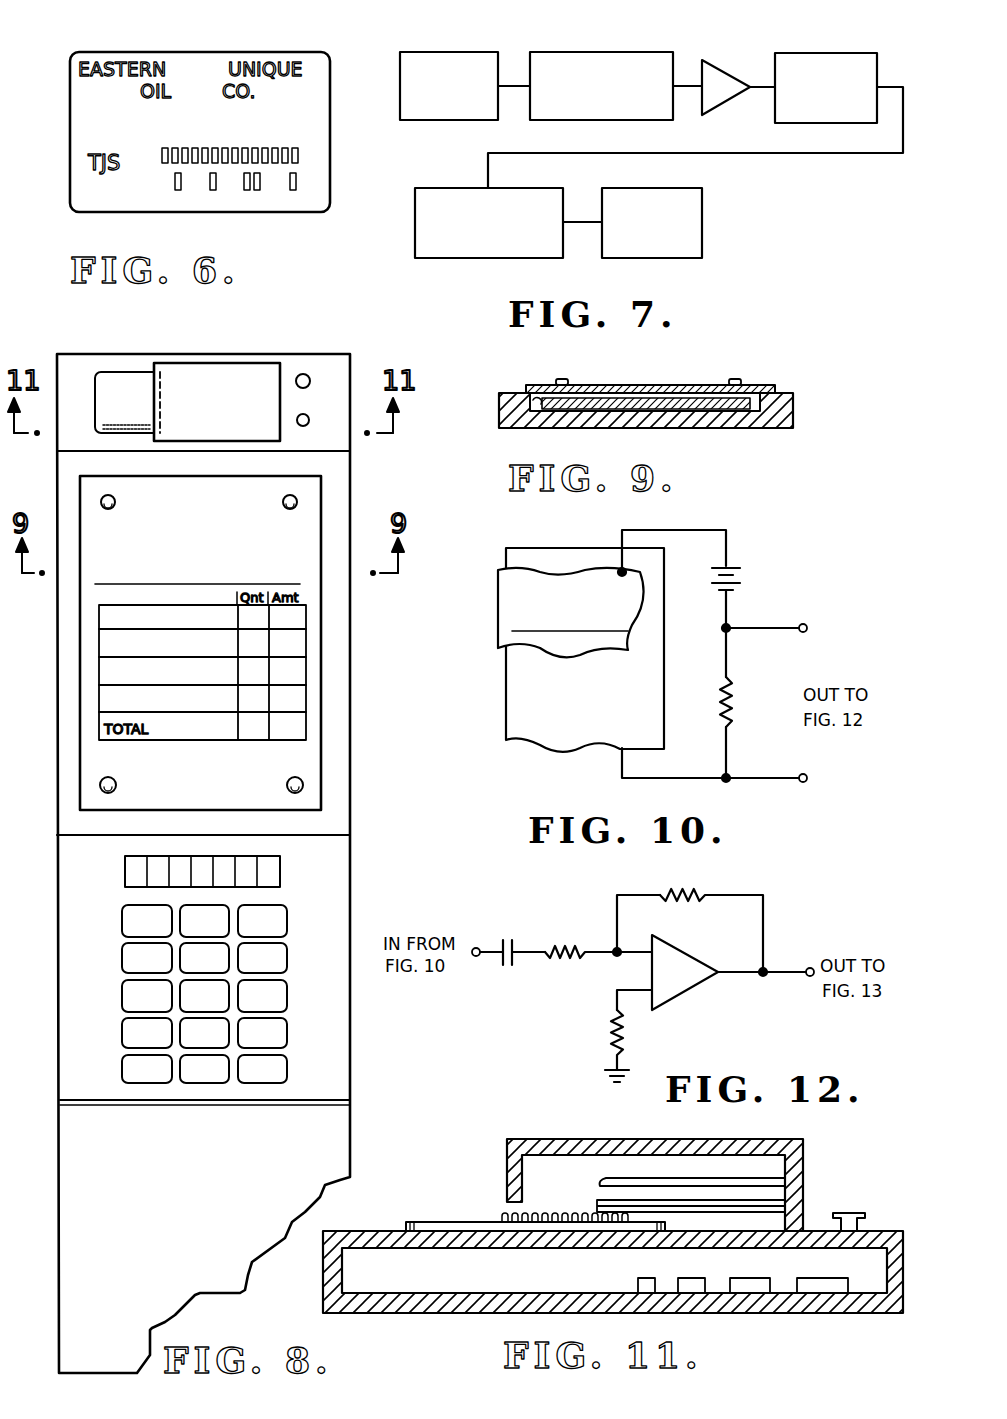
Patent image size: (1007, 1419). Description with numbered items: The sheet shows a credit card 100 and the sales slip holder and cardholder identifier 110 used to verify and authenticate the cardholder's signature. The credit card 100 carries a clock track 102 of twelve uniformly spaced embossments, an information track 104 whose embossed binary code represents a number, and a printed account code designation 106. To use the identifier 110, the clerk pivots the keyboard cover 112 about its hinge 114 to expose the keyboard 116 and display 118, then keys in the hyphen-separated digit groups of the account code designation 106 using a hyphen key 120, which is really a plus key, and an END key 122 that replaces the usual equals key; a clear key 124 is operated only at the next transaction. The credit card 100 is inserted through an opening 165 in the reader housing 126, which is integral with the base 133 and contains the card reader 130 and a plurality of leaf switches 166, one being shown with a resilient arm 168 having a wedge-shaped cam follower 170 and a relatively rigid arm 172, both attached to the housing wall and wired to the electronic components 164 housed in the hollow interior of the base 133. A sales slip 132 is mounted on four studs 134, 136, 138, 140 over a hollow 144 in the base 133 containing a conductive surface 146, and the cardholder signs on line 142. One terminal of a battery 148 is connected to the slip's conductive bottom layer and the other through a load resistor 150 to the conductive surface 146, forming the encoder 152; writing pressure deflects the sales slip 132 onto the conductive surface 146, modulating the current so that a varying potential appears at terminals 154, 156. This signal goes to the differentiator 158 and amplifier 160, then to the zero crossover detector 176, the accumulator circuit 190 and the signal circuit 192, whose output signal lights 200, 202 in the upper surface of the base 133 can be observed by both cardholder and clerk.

In FIG. 6, the credit card 100 is at (112, 219).
In FIG. 8, the credit card 100 is at (122, 372).
In FIG. 11, the credit card 100 is at (437, 1222).
In FIG. 6, the clock track 102 is at (306, 154).
In FIG. 6, the information track 104 is at (304, 182).
In FIG. 6, the account code designation 106 is at (282, 113).
In FIG. 8, the sales slip holder and cardholder identifier 110 is at (362, 700).
In FIG. 9, the sales slip holder and cardholder identifier 110 is at (801, 397).
In FIG. 11, the sales slip holder and cardholder identifier 110 is at (468, 1206).
In FIG. 8, the keyboard cover 112 is at (66, 1185).
In FIG. 8, the hinge 114 is at (325, 1105).
In FIG. 8, the keyboard 116 is at (110, 995).
In FIG. 8, the display 118 is at (119, 870).
In FIG. 8, the hyphen key 120 is at (220, 950).
In FIG. 8, the END key 122 is at (283, 965).
In FIG. 8, the clear key 124 is at (300, 894).
In FIG. 8, the reader housing 126 is at (218, 370).
In FIG. 11, the reader housing 126 is at (803, 1182).
In FIG. 11, the card reader 130 is at (582, 1190).
In FIG. 8, the sales slip 132 is at (85, 757).
In FIG. 9, the sales slip 132 is at (672, 385).
In FIG. 10, the sales slip 132 is at (508, 598).
In FIG. 8, the base 133 is at (66, 667).
In FIG. 9, the base 133 is at (783, 420).
In FIG. 11, the base 133 is at (876, 1231).
In FIG. 8, the stud 134 is at (115, 500).
In FIG. 9, the stud 134 is at (562, 380).
In FIG. 8, the stud 136 is at (283, 500).
In FIG. 9, the stud 136 is at (740, 380).
In FIG. 8, the stud 138 is at (100, 789).
In FIG. 8, the stud 140 is at (304, 784).
In FIG. 8, the signature line 142 is at (282, 581).
In FIG. 10, the signature line 142 is at (583, 630).
In FIG. 9, the hollow 144 is at (537, 403).
In FIG. 9, the conductive surface 146 is at (598, 404).
In FIG. 10, the conductive surface 146 is at (598, 706).
In FIG. 10, the battery 148 is at (737, 572).
In FIG. 10, the load resistor 150 is at (732, 697).
In FIG. 7, the encoder 152 is at (452, 53).
In FIG. 10, the encoder 152 is at (780, 593).
In FIG. 10, the terminal 154 is at (810, 626).
In FIG. 10, the terminal 156 is at (808, 783).
In FIG. 7, the differentiator 158 is at (607, 53).
In FIG. 12, the differentiator 158 is at (696, 999).
In FIG. 7, the amplifier 160 is at (714, 61).
In FIG. 11, the electronic components 164 is at (800, 1287).
In FIG. 11, the opening 165 is at (515, 1206).
In FIG. 11, the leaf switch 166 is at (687, 1172).
In FIG. 11, the resilient arm 168 is at (803, 1142).
In FIG. 11, the cam follower 170 is at (597, 1207).
In FIG. 11, the rigid arm 172 is at (723, 1178).
In FIG. 7, the zero crossover detector 176 is at (828, 54).
In FIG. 7, the accumulator circuit 190 is at (472, 259).
In FIG. 7, the signal circuit 192 is at (692, 259).
In FIG. 8, the output signal light 200 is at (306, 374).
In FIG. 8, the output signal light 202 is at (309, 426).